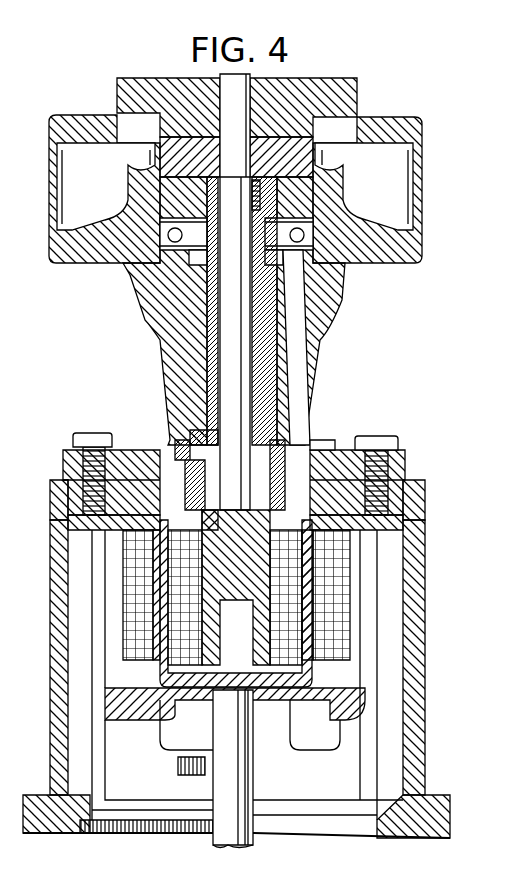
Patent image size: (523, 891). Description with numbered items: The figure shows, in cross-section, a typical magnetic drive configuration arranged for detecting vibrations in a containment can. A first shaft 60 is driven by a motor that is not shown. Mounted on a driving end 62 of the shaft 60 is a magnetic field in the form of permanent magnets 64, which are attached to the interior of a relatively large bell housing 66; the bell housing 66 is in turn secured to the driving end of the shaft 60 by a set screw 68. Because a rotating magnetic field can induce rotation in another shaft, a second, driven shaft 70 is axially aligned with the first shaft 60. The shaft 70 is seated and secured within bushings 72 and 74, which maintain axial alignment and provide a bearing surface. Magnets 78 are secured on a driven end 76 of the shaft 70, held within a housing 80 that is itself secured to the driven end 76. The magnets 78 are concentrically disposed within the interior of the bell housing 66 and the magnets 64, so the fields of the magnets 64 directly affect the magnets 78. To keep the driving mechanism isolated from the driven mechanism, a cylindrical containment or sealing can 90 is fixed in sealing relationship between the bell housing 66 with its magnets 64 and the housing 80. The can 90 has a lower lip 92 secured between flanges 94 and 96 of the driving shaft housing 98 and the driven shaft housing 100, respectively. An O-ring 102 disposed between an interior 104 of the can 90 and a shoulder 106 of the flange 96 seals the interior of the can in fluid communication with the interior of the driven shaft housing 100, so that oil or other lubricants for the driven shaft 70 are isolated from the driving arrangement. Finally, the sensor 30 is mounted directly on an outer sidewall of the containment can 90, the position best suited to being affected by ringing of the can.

The sensor 30 is at (75, 520).
The first shaft 60 is at (250, 815).
The driving end 62 is at (253, 728).
The magnets 64 is at (330, 625).
The bell housing 66 is at (355, 660).
The set screw 68 is at (178, 765).
The second shaft 70 is at (262, 356).
The bushing 72 is at (268, 300).
The bushing 74 is at (296, 383).
The driven end 76 is at (205, 430).
The magnets 78 is at (345, 540).
The housing 80 is at (340, 550).
The containment can 90 is at (160, 676).
The lower lip 92 is at (100, 447).
The flange 94 is at (60, 480).
The flange 96 is at (140, 450).
The driving shaft housing 98 is at (55, 556).
The driven shaft housing 100 is at (165, 347).
The O-ring 102 is at (326, 450).
The interior 104 is at (400, 470).
The shoulder 106 is at (398, 445).